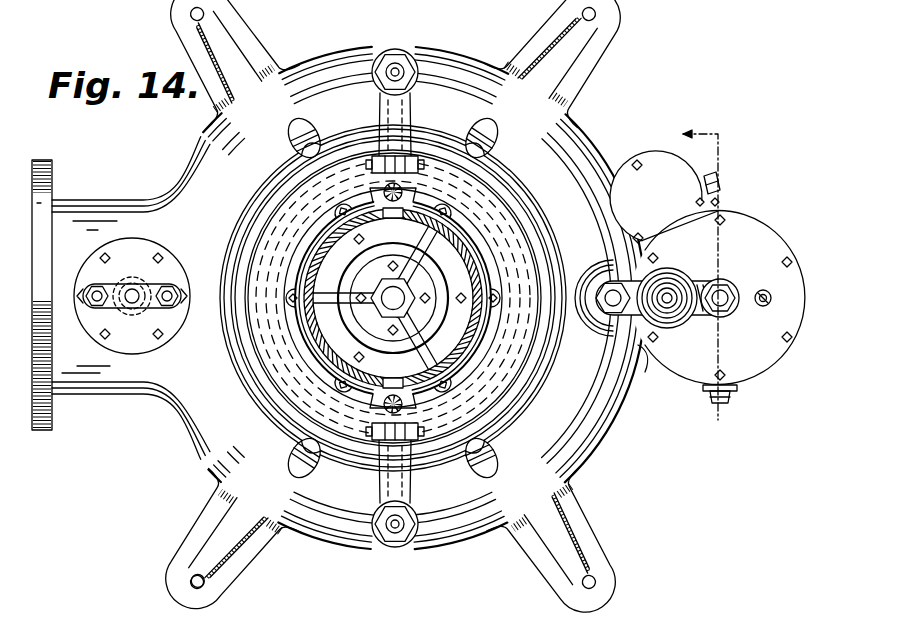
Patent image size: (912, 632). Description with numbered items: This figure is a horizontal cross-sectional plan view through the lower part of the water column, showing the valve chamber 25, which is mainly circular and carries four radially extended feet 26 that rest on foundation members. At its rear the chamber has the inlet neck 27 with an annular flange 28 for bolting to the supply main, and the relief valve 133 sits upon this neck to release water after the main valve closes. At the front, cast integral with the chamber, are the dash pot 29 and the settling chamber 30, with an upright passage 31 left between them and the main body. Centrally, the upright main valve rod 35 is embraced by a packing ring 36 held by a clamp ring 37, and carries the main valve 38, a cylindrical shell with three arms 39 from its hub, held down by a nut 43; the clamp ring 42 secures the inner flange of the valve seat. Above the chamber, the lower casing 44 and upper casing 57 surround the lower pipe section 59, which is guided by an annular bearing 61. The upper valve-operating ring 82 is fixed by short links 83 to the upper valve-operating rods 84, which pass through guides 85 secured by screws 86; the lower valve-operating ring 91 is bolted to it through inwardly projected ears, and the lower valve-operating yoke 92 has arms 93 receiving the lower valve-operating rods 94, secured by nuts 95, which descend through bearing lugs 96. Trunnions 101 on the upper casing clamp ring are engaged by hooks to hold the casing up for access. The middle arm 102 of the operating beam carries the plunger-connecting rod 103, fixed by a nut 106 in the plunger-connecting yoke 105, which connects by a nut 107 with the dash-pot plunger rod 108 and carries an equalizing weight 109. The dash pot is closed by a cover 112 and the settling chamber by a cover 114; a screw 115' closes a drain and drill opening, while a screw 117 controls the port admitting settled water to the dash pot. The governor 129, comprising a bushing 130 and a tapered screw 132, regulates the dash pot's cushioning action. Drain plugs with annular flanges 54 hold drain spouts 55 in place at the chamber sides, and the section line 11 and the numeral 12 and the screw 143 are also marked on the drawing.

The section line 11 is at (706, 275).
The casing 12 is at (226, 598).
The valve chamber 25 is at (600, 434).
The radially extended feet 26 is at (240, 34).
The inlet neck 27 is at (97, 200).
The annular flange 28 is at (52, 416).
The dash pot 29 is at (648, 352).
The settling chamber 30 is at (628, 152).
The upright passage 31 is at (620, 265).
The main valve rod 35 is at (425, 285).
The packing ring 36 is at (370, 310).
The clamp ring 37 is at (420, 312).
The main valve 38 is at (394, 333).
The arms 39 is at (424, 240).
The clamp ring 42 is at (393, 295).
The nut 43 is at (385, 286).
The lower casing 44 is at (526, 195).
The annular flange 54 is at (292, 145).
The drain spout 55 is at (310, 125).
The upper casing 57 is at (541, 352).
The lower pipe section 59 is at (348, 360).
The annular bearing 61 is at (458, 238).
The upper valve-operating ring 82 is at (270, 214).
The short links 83 is at (410, 156).
The upper valve-operating rods 84 is at (382, 156).
The guides 85 is at (360, 190).
The screws 86 is at (400, 298).
The lower valve-operating ring 91 is at (505, 242).
The lower valve-operating yoke 92 is at (376, 83).
The arms 93 is at (406, 60).
The lower valve-operating rods 94 is at (393, 52).
The nuts 95 is at (416, 75).
The bearing lugs 96 is at (398, 55).
The trunnions 101 is at (416, 510).
The middle arm 102 is at (604, 316).
The plunger-connecting rod 103 is at (611, 292).
The plunger-connecting yoke 105 is at (698, 282).
The nut 106 is at (603, 338).
The nut 107 is at (735, 290).
The dash-pot plunger rod 108 is at (738, 312).
The weight 109 is at (672, 326).
The cover 112 is at (763, 370).
The cover 114 is at (652, 165).
The screw 115' is at (735, 182).
The screw 117 is at (722, 203).
The governor 129 is at (704, 392).
The bushing 130 is at (732, 398).
The screw 132 is at (712, 404).
The relief valve 133 is at (130, 283).
The screw 143 is at (776, 298).